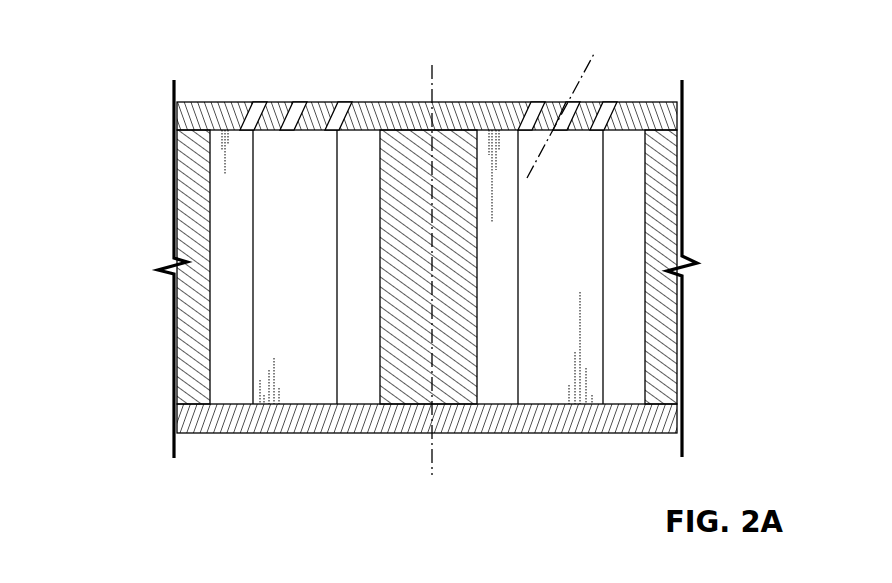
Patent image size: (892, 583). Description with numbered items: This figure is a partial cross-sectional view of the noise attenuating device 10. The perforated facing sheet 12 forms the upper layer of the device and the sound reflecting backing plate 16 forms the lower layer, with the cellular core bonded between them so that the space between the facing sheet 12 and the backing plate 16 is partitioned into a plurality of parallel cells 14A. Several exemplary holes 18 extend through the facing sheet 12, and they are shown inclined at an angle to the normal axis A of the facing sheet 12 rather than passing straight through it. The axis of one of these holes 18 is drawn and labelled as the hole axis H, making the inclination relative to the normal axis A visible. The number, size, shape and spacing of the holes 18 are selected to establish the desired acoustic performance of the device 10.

The noise attenuating device 10 is at (376, 239).
The perforated facing sheet 12 is at (185, 108).
The parallel cells 14A is at (323, 278).
The sound reflecting backing plate 16 is at (182, 412).
The holes 18 is at (343, 103).
The normal axis A is at (432, 85).
The hole axis H is at (588, 73).